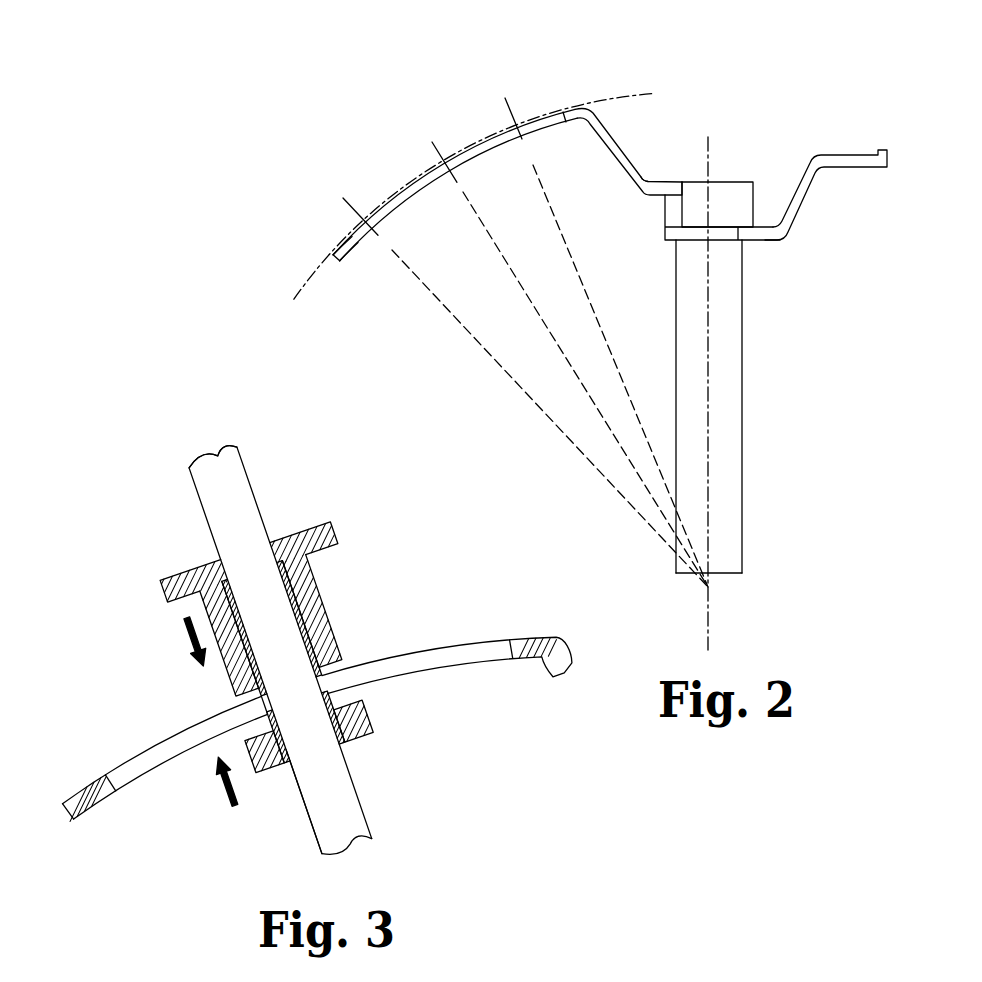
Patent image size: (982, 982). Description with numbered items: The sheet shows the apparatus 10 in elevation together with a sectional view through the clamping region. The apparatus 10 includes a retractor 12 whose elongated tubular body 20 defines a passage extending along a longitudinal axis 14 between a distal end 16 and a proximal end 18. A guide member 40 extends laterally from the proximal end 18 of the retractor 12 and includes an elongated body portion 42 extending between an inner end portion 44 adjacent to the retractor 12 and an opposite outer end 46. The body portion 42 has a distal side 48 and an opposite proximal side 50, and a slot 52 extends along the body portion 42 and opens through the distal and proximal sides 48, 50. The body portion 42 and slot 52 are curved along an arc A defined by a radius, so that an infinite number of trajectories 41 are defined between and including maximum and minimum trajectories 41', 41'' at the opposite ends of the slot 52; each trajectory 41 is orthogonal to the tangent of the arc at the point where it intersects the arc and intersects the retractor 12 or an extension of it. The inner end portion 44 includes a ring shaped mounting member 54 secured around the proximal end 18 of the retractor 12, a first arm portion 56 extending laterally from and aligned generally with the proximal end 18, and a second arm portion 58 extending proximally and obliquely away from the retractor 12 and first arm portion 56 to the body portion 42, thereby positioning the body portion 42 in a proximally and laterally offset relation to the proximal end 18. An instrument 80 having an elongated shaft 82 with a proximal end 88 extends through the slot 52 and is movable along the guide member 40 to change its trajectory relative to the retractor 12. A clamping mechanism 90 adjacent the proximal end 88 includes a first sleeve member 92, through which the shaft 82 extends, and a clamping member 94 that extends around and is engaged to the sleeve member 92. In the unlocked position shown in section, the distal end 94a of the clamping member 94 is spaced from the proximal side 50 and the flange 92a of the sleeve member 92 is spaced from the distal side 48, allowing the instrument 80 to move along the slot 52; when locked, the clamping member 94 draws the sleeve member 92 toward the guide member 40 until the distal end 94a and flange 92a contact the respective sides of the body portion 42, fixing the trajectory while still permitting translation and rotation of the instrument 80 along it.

In FIG. 2, the apparatus 10 is at (564, 332).
In FIG. 2, the retractor 12 is at (758, 385).
In FIG. 2, the longitudinal axis 14 is at (709, 143).
In FIG. 2, the distal end 16 is at (742, 573).
In FIG. 2, the proximal end 18 is at (743, 241).
In FIG. 2, the elongated tubular body 20 is at (742, 450).
In FIG. 2, the guide member 40 is at (409, 216).
In FIG. 3, the guide member 40 is at (328, 725).
In FIG. 2, the trajectory 41 is at (570, 364).
In FIG. 2, the maximum trajectory 41' is at (606, 342).
In FIG. 2, the minimum trajectory 41'' is at (525, 392).
In FIG. 3, the elongated body portion 42 is at (87, 780).
In FIG. 2, the inner end portion 44 is at (645, 178).
In FIG. 2, the outer end 46 is at (334, 256).
In FIG. 3, the outer end 46 is at (66, 819).
In FIG. 3, the distal side 48 is at (485, 663).
In FIG. 3, the proximal side 50 is at (455, 642).
In FIG. 2, the slot 52 is at (352, 238).
In FIG. 3, the slot 52 is at (115, 777).
In FIG. 2, the mounting member 54 is at (742, 190).
In FIG. 2, the first arm portion 56 is at (654, 190).
In FIG. 2, the second arm portion 58 is at (639, 152).
In FIG. 3, the instrument 80 is at (312, 635).
In FIG. 3, the elongated shaft 82 is at (302, 796).
In FIG. 3, the proximal end 88 is at (232, 448).
In FIG. 3, the clamping mechanism 90 is at (342, 517).
In FIG. 3, the first sleeve member 92 is at (324, 700).
In FIG. 3, the flange 92a is at (372, 724).
In FIG. 3, the clamping member 94 is at (315, 590).
In FIG. 3, the distal end 94a is at (337, 660).
In FIG. 2, the arc A is at (647, 97).